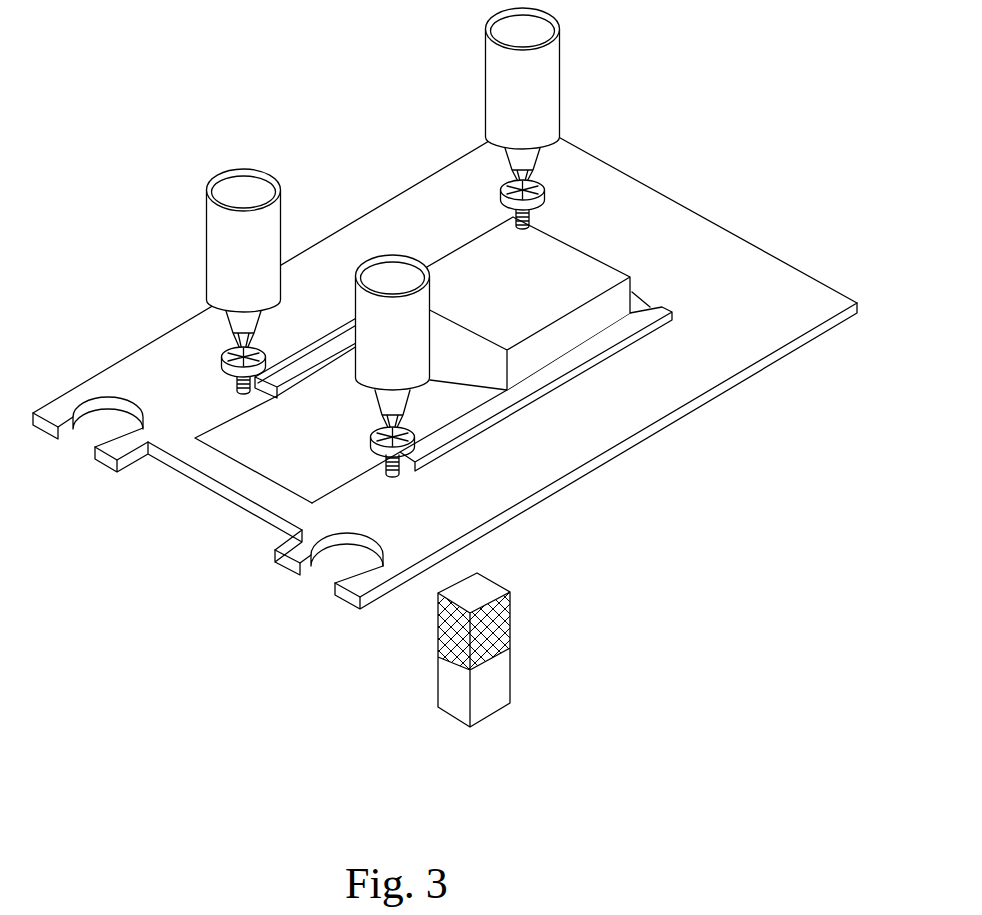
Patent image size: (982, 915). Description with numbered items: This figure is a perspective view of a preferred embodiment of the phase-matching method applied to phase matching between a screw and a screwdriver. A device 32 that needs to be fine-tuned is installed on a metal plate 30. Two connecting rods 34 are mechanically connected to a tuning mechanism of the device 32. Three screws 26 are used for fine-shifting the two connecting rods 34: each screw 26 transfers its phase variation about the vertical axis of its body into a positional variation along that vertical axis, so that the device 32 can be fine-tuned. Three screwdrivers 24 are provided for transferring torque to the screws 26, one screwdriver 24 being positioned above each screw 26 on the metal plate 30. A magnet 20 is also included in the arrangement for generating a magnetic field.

The magnet 20 is at (508, 662).
The screwdriver 24 is at (513, 80).
The screw 26 is at (548, 191).
The metal plate 30 is at (180, 433).
The device 32 is at (483, 263).
The connecting rod 34 is at (303, 368).